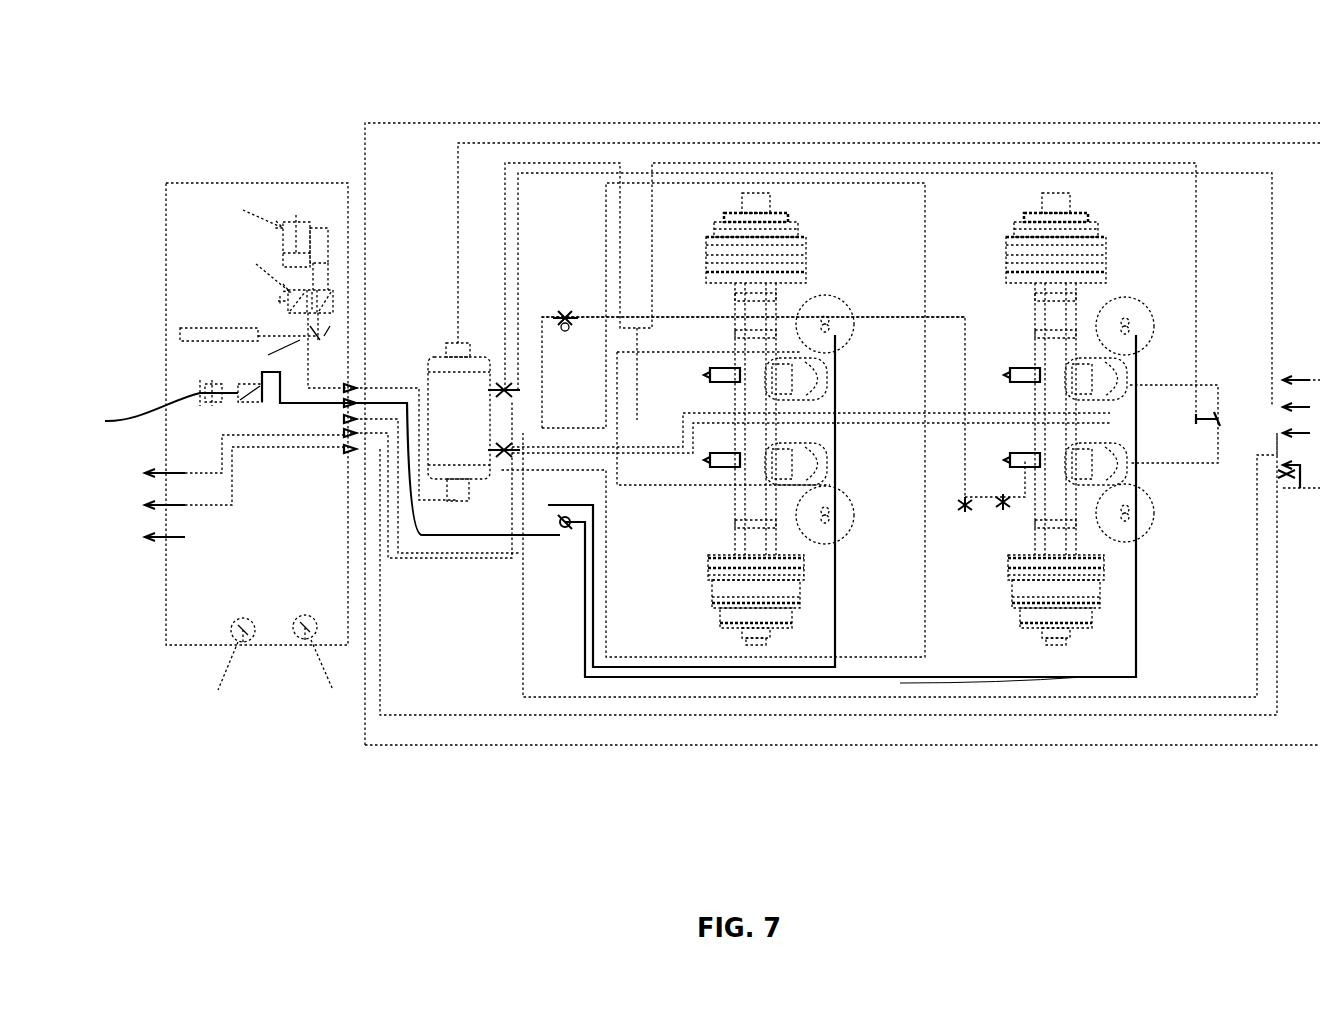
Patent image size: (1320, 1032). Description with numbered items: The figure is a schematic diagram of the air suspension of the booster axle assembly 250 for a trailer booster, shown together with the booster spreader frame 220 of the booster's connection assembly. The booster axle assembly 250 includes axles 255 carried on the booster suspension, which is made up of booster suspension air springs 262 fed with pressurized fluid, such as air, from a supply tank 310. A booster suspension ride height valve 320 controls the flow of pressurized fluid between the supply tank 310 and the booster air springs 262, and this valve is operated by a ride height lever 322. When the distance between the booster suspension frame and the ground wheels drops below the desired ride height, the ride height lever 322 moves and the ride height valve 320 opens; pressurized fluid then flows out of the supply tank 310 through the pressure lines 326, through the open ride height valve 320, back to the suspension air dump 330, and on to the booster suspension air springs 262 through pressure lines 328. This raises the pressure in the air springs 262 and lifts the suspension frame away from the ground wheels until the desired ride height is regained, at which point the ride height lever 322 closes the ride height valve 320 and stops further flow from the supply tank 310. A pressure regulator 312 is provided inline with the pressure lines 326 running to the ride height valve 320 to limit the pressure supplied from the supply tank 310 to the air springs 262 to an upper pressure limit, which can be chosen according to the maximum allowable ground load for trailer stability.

The booster spreader frame 220 is at (187, 184).
The booster axle assembly 250 is at (868, 124).
The axles 255 is at (755, 540).
The booster suspension air springs 262 is at (847, 305).
The supply tank 310 is at (460, 462).
The pressure regulator 312 is at (563, 308).
The booster suspension ride height valve 320 is at (963, 510).
The ride height lever 322 is at (1007, 515).
The pressure lines 326 is at (963, 314).
The pressure lines 328 is at (1125, 680).
The suspension air dump 330 is at (582, 506).